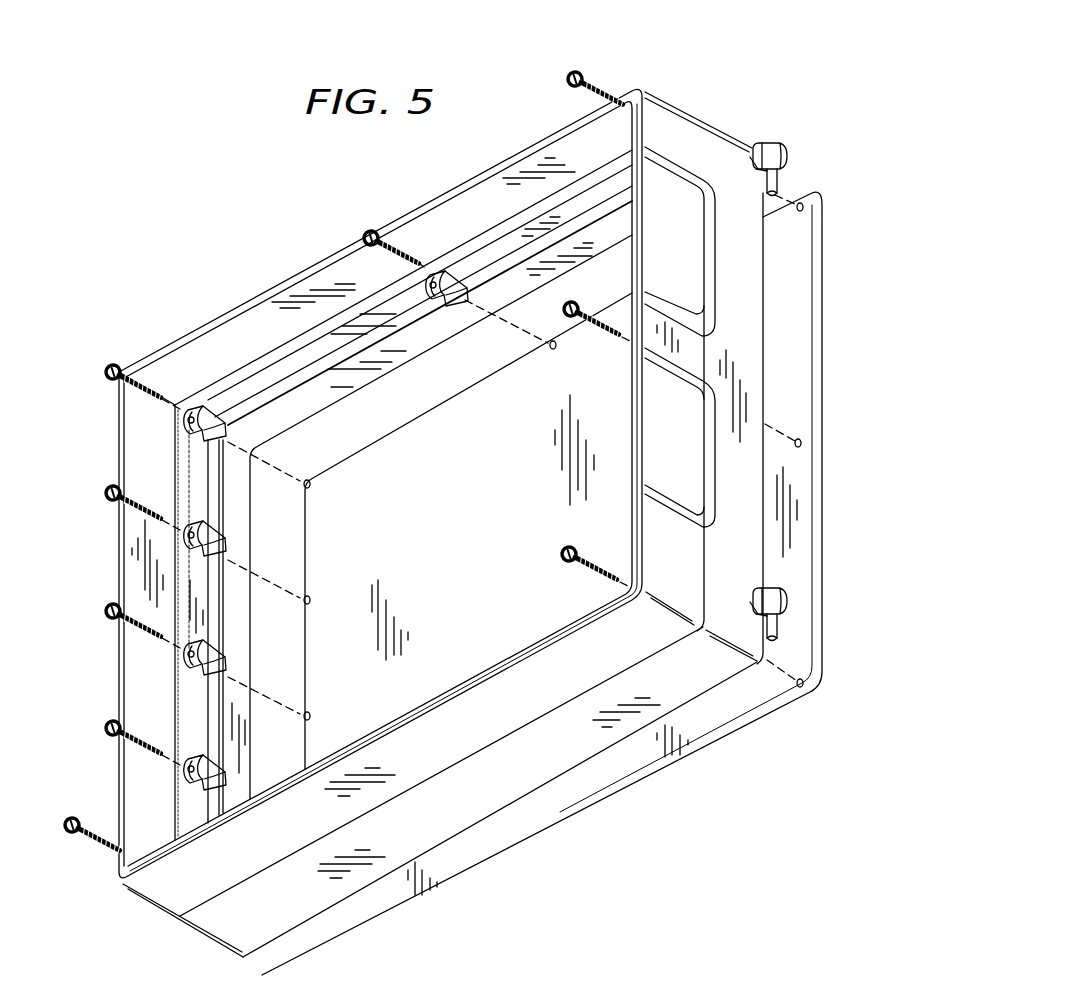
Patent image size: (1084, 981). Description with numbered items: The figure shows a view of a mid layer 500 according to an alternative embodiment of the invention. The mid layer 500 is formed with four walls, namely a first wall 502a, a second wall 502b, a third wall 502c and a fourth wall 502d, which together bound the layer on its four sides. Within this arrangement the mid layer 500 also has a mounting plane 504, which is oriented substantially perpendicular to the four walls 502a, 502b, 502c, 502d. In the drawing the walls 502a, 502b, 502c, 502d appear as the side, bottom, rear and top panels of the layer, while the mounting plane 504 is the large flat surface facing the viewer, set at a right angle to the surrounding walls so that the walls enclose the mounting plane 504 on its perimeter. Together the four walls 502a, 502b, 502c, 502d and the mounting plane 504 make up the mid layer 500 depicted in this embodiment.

The mid layer 500 is at (742, 37).
The wall 502a is at (118, 650).
The wall 502b is at (455, 822).
The wall 502c is at (745, 300).
The wall 502d is at (241, 304).
The mounting plane 504 is at (474, 562).